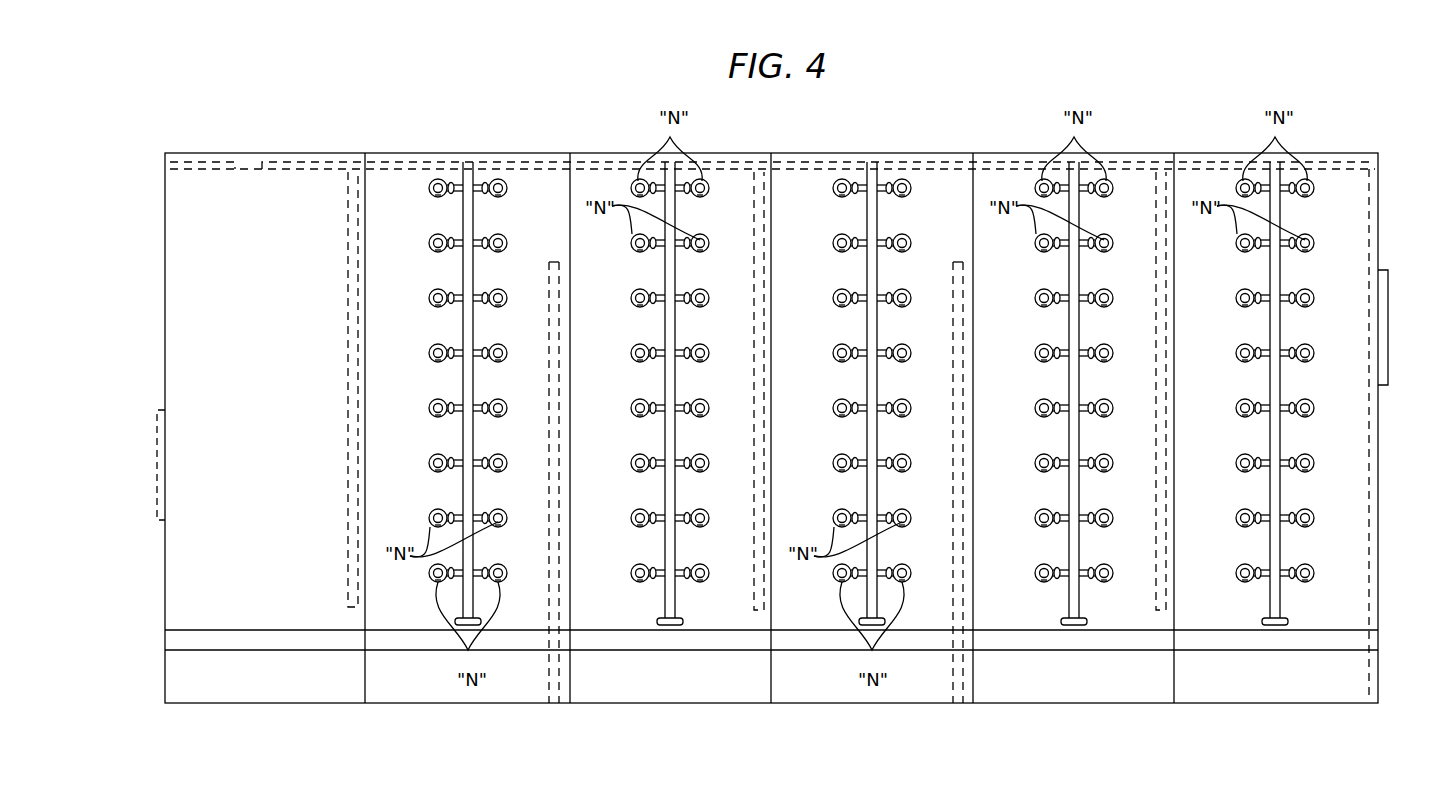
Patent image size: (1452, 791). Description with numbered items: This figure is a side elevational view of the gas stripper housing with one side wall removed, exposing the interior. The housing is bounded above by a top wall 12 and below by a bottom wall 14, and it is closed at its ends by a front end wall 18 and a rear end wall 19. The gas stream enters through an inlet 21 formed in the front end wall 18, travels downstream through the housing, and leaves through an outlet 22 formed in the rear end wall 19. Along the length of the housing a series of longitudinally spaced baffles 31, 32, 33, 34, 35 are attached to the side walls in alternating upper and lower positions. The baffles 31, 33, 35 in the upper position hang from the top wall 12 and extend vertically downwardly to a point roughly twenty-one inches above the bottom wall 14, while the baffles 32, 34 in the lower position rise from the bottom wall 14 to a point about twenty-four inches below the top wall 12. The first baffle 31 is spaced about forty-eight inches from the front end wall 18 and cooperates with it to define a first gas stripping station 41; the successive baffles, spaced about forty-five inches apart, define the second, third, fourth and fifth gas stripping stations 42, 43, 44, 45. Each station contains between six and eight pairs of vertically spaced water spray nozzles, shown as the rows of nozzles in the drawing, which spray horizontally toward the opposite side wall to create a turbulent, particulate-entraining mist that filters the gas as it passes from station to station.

The top wall 12 is at (297, 159).
The bottom wall 14 is at (254, 630).
The front end wall 18 is at (1378, 475).
The rear end wall 19 is at (165, 292).
The inlet 21 is at (1388, 318).
The outlet 22 is at (152, 467).
The first baffle 31 is at (1177, 280).
The second baffle 32 is at (965, 557).
The third baffle 33 is at (774, 279).
The fourth baffle 34 is at (560, 605).
The end baffle 35 is at (368, 279).
The first gas stripping station 41 is at (1333, 188).
The second gas stripping station 42 is at (1118, 612).
The third gas stripping station 43 is at (930, 188).
The fourth gas stripping station 44 is at (716, 612).
The fifth gas stripping station 45 is at (527, 188).